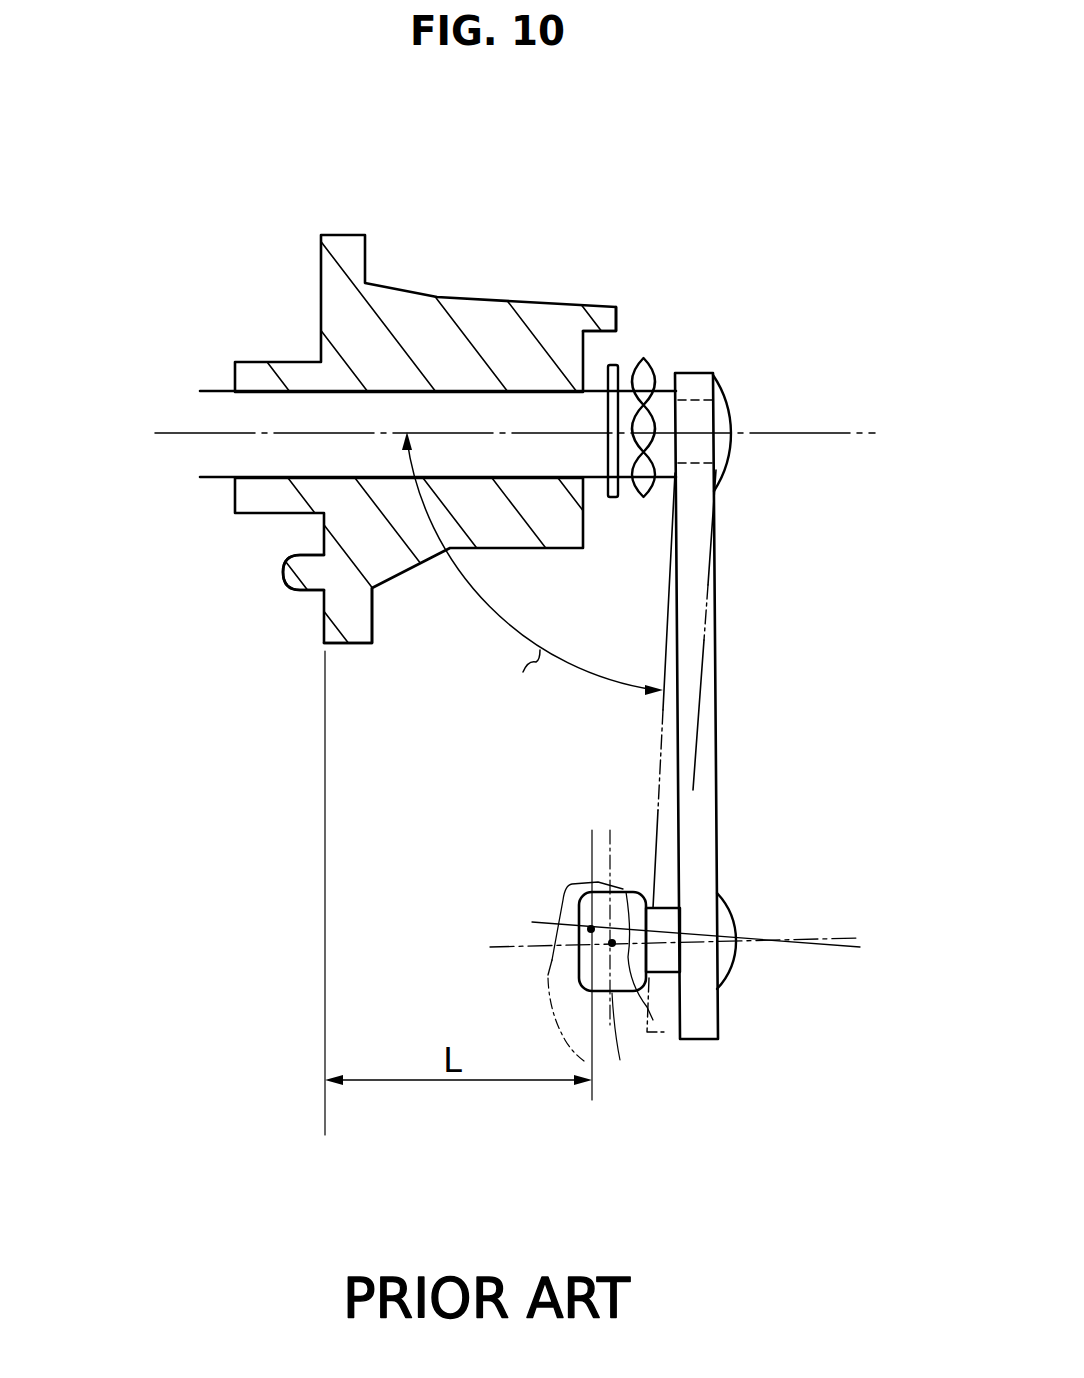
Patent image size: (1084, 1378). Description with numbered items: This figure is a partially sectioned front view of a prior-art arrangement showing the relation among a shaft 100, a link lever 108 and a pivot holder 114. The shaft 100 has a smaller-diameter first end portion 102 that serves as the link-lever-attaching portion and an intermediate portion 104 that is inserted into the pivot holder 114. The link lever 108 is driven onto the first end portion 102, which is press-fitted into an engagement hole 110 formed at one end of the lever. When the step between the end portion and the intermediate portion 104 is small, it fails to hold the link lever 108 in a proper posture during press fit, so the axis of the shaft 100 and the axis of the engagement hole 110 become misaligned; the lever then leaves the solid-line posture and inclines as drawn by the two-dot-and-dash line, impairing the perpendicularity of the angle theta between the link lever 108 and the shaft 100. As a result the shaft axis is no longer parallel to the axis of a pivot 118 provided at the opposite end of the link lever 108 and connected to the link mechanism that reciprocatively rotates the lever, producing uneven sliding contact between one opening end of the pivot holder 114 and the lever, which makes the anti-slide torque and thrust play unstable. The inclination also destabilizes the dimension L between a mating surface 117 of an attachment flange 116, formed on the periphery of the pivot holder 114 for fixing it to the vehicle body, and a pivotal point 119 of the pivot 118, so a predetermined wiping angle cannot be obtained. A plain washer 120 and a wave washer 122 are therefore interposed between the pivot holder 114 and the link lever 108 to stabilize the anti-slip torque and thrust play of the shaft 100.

The shaft 100 is at (487, 392).
The first end portion 102 is at (693, 397).
The intermediate portion 104 is at (387, 390).
The link lever 108 is at (697, 697).
The engagement hole 110 is at (707, 398).
The pivot holder 114 is at (545, 390).
The attachment flange 116 is at (358, 630).
The mating surface 117 is at (325, 623).
The pivot 118 is at (557, 982).
The pivotal point 119 is at (572, 905).
The plain washer 120 is at (618, 367).
The wave washer 122 is at (657, 367).